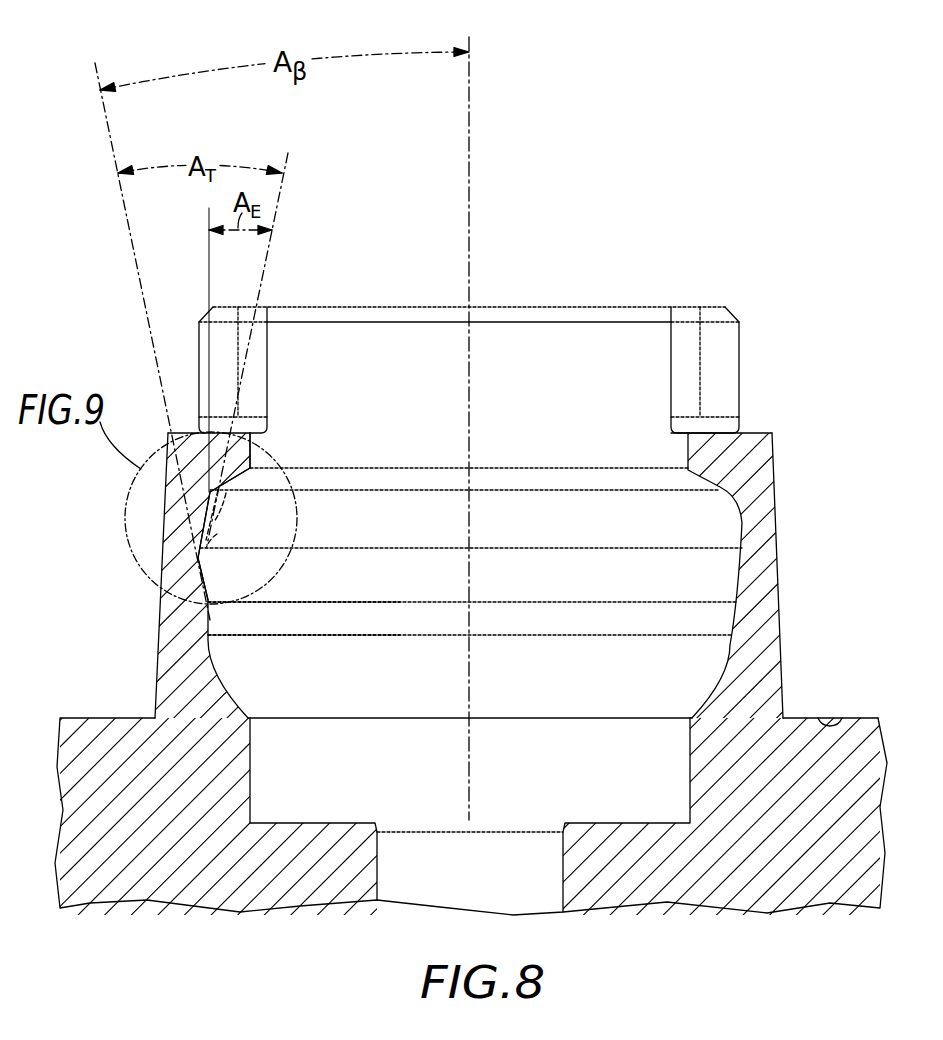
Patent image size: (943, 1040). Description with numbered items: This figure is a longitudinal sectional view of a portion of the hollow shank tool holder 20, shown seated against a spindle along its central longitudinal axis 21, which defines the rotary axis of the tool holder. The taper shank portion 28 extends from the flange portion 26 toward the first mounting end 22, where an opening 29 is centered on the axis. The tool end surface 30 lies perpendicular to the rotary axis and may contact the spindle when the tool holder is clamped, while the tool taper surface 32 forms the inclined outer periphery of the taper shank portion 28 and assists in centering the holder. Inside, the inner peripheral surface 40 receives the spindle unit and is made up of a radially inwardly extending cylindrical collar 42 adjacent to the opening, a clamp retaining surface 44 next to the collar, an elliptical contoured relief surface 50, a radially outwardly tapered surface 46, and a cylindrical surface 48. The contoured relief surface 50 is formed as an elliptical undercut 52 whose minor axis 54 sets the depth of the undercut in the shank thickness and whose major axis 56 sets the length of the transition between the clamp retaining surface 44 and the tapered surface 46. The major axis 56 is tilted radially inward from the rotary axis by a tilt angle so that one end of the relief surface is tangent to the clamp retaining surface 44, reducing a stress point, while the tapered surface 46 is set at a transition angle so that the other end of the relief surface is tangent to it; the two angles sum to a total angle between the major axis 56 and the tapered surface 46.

The hollow shank tool holder 20 is at (90, 271).
The central longitudinal axis 21 is at (470, 215).
The first mounting end 22 is at (727, 362).
The flange portion 26 is at (838, 828).
The taper shank portion 28 is at (758, 460).
The opening 29 is at (675, 321).
The tool end surface 30 is at (822, 720).
The tool taper surface 32 is at (780, 553).
The inner peripheral surface 40 is at (283, 568).
The radially inwardly extending cylindrical collar 42 is at (250, 436).
The clamp retaining surface 44 is at (257, 474).
The radially outwardly tapered surface 46 is at (200, 566).
The cylindrical surface 48 is at (208, 635).
The elliptical contoured relief surface 50 is at (205, 493).
The elliptical undercut 52 is at (214, 532).
The minor axis 54 is at (217, 534).
The major axis 56 is at (270, 498).